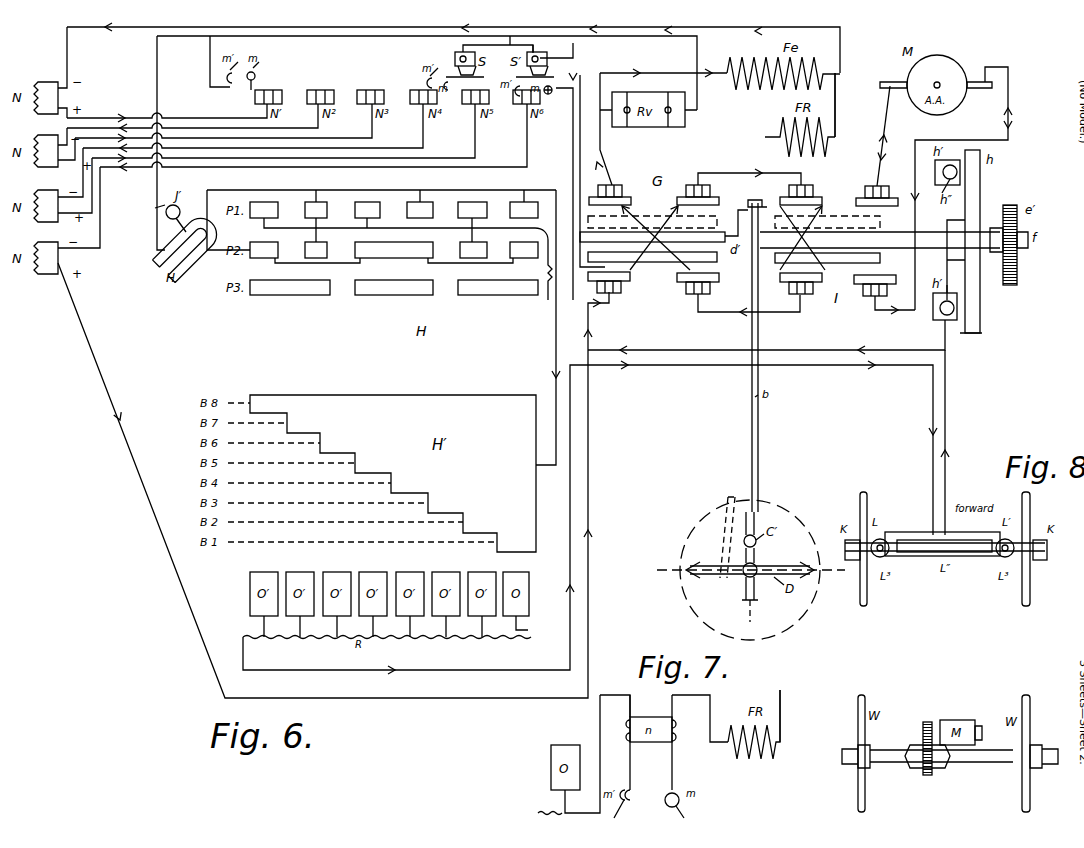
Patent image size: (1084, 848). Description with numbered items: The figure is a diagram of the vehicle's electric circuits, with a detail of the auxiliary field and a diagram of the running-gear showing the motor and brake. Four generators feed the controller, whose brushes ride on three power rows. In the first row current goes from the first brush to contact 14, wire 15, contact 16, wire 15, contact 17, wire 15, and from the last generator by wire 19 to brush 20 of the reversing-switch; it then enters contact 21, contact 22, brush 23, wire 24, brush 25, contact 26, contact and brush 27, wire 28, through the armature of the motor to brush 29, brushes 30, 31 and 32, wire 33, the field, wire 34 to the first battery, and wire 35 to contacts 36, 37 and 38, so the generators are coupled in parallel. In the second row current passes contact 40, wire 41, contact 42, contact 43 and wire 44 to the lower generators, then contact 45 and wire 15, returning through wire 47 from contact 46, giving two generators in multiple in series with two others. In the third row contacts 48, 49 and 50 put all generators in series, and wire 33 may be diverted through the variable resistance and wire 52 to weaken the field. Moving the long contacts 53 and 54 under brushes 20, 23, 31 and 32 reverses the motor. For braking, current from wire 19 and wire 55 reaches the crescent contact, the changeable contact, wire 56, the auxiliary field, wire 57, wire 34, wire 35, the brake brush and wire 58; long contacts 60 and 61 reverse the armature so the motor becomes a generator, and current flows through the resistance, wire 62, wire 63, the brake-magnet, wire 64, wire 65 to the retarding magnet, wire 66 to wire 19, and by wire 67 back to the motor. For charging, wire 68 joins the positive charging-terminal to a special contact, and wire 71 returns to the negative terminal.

In FIG. 6, the contact 14 is at (264, 210).
In FIG. 6, the wire 15 is at (408, 259).
In FIG. 6, the contact 16 is at (367, 210).
In FIG. 6, the contact 17 is at (472, 210).
In FIG. 6, the wire 19 is at (333, 480).
In FIG. 6, the brush 20 is at (614, 286).
In FIG. 6, the contact 21 is at (654, 242).
In FIG. 6, the contact 22 is at (664, 219).
In FIG. 6, the brush 23 is at (702, 192).
In FIG. 6, the wire 24 is at (749, 172).
In FIG. 6, the brush 25 is at (807, 193).
In FIG. 6, the contact 26 is at (813, 234).
In FIG. 6, the contact and brush 27 is at (884, 294).
In FIG. 6, the wire 28 is at (969, 188).
In FIG. 6, the brush 29 is at (881, 193).
In FIG. 6, the brush 30 is at (795, 286).
In FIG. 6, the brush 31 is at (738, 294).
In FIG. 6, the brush 32 is at (612, 171).
In FIG. 6, the wire 33 is at (660, 122).
In FIG. 6, the wire 34 is at (453, 48).
In FIG. 6, the wire 35 is at (575, 178).
In FIG. 6, the contact 36 is at (535, 327).
In FIG. 6, the contact 37 is at (420, 210).
In FIG. 6, the contact 38 is at (316, 210).
In FIG. 6, the contact 40 is at (264, 250).
In FIG. 6, the wire 41 is at (317, 265).
In FIG. 6, the contact 42 is at (394, 250).
In FIG. 6, the contact 43 is at (524, 250).
In FIG. 6, the wire 44 is at (470, 265).
In FIG. 6, the contact 45 is at (473, 250).
In FIG. 6, the contact 46 is at (316, 250).
In FIG. 6, the wire 47 is at (381, 213).
In FIG. 6, the contact 48 is at (290, 287).
In FIG. 6, the contact 49 is at (394, 287).
In FIG. 6, the contact 50 is at (498, 287).
In FIG. 6, the wire 52 is at (428, 185).
In FIG. 6, the long contact 53 is at (652, 257).
In FIG. 6, the long contact 54 is at (652, 222).
In FIG. 7, the wire 55 is at (659, 806).
In FIG. 6, the wire 56 is at (793, 137).
In FIG. 7, the wire 56 is at (664, 736).
In FIG. 6, the wire 57 is at (818, 407).
In FIG. 7, the wire 57 is at (766, 724).
In FIG. 6, the wire 58 is at (528, 632).
In FIG. 7, the wire 58 is at (584, 754).
In FIG. 6, the long contact 60 is at (832, 258).
In FIG. 6, the long contact 61 is at (832, 222).
In FIG. 6, the wire 62 is at (547, 355).
In FIG. 6, the wire 63 is at (918, 552).
In FIG. 6, the wire 64 is at (942, 537).
In FIG. 6, the wire 65 is at (772, 348).
In FIG. 6, the wire 66 is at (766, 337).
In FIG. 6, the wire 67 is at (893, 136).
In FIG. 6, the wire 68 is at (581, 56).
In FIG. 6, the wire 71 is at (500, 56).